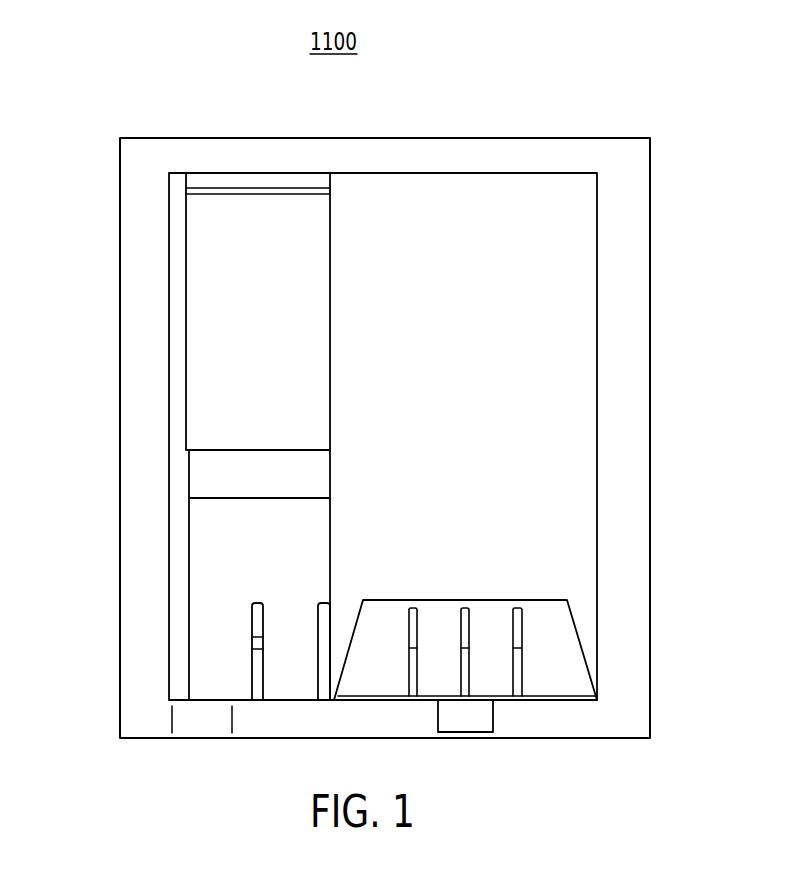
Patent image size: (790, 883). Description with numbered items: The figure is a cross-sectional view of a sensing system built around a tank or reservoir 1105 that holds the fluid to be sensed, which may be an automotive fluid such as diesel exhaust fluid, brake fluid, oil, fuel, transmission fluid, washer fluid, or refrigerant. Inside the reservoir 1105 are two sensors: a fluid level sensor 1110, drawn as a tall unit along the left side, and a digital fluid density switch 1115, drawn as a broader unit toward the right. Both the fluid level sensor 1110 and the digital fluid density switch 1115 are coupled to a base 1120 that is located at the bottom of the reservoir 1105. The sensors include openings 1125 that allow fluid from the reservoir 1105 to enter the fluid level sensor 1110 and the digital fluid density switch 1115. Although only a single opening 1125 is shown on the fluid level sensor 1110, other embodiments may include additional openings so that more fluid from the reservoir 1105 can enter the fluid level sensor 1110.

The reservoir 1105 is at (118, 184).
The fluid level sensor 1110 is at (213, 520).
The digital fluid density switch 1115 is at (558, 639).
The base 1120 is at (207, 722).
The openings 1125 is at (258, 618).